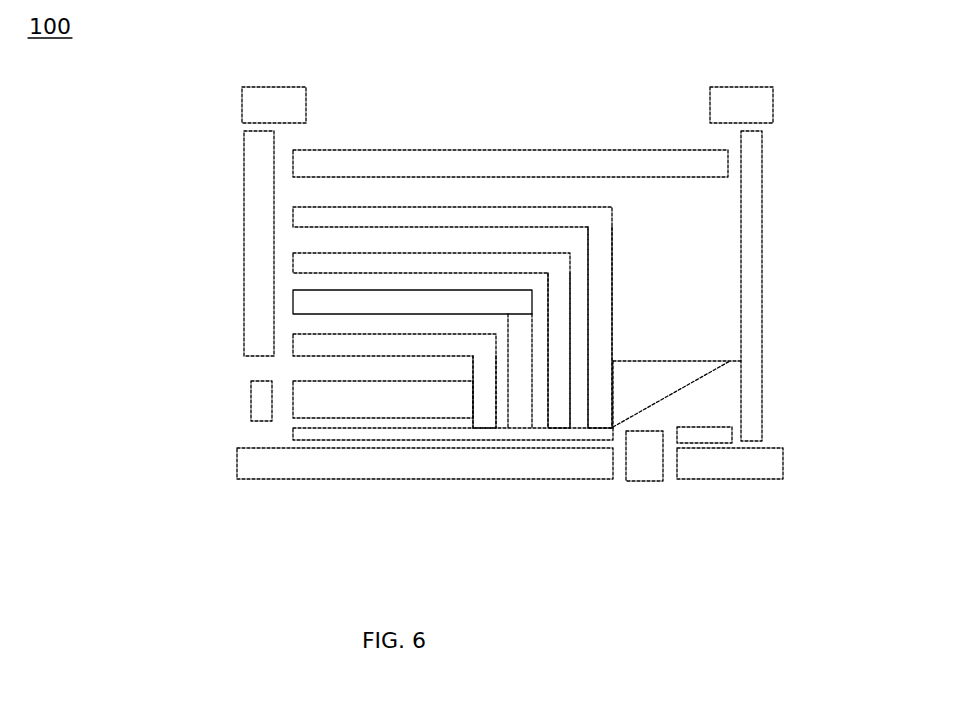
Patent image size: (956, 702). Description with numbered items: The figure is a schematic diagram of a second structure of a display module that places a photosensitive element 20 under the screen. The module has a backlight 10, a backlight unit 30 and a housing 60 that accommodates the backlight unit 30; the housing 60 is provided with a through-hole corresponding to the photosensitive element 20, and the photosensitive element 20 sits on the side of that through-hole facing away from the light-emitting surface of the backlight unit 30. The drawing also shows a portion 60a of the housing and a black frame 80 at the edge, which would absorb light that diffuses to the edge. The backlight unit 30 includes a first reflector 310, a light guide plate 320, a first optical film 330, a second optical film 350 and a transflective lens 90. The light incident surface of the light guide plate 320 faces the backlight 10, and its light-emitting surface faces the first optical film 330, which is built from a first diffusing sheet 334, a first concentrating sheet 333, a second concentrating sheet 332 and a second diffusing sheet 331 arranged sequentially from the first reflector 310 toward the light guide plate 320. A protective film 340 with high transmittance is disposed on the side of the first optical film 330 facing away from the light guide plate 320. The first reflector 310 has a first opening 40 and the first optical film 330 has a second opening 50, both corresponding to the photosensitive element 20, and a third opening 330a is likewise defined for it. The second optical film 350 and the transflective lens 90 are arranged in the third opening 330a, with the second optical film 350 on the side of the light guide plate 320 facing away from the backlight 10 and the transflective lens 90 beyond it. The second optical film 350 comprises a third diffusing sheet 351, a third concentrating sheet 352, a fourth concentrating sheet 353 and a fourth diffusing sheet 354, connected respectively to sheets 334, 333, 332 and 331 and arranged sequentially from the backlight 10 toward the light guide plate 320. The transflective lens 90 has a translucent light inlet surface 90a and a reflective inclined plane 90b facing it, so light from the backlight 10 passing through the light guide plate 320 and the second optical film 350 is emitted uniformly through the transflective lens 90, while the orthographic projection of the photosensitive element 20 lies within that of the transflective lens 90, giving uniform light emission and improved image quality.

The backlight 10 is at (252, 415).
The photosensitive element 20 is at (640, 477).
The backlight unit 30 is at (105, 245).
The first opening 40 is at (667, 477).
The second opening 50 is at (677, 290).
The housing 60 is at (725, 462).
The conductive line portion 60a is at (680, 462).
The black frame 80 is at (304, 97).
The transflective lens 90 is at (677, 380).
The light inlet surface 90a is at (615, 389).
The inclined plane 90b is at (668, 398).
The first reflector 310 is at (295, 437).
The light guide plate 320 is at (335, 412).
The first optical film 330 is at (342, 303).
The third opening 330a is at (686, 248).
The second diffusing sheet 331 is at (312, 210).
The second concentrating sheet 332 is at (312, 265).
The first concentrating sheet 333 is at (320, 308).
The first diffusing sheet 334 is at (320, 373).
The protective film 340 is at (312, 163).
The second optical film 350 is at (521, 397).
The third diffusing sheet 351 is at (480, 420).
The third concentrating sheet 352 is at (517, 420).
The fourth concentrating sheet 353 is at (553, 420).
The fourth diffusing sheet 354 is at (603, 376).